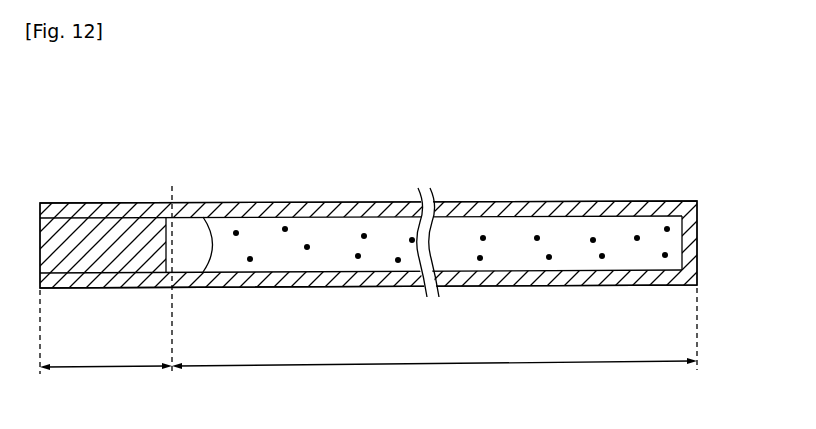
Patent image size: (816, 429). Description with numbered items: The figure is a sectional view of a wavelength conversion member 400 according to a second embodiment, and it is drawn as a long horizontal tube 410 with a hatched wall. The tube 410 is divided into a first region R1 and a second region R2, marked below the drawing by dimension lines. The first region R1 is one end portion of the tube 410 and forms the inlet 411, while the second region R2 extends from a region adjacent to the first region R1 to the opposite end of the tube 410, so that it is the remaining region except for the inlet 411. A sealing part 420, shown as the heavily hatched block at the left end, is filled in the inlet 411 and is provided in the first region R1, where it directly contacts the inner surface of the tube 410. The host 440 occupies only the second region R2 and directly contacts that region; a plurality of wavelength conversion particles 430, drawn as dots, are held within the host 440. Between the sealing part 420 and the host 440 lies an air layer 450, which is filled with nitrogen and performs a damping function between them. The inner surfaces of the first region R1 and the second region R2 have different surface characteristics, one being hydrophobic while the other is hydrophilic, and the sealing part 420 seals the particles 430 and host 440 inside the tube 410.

The wavelength conversion member 400 is at (100, 96).
The tube 410 is at (544, 209).
The inlet 411 is at (98, 212).
The sealing part 420 is at (110, 254).
The wavelength conversion particles 430 is at (307, 249).
The host 440 is at (235, 255).
The air layer 450 is at (204, 236).
The first region R1 is at (106, 293).
The second region R2 is at (434, 342).